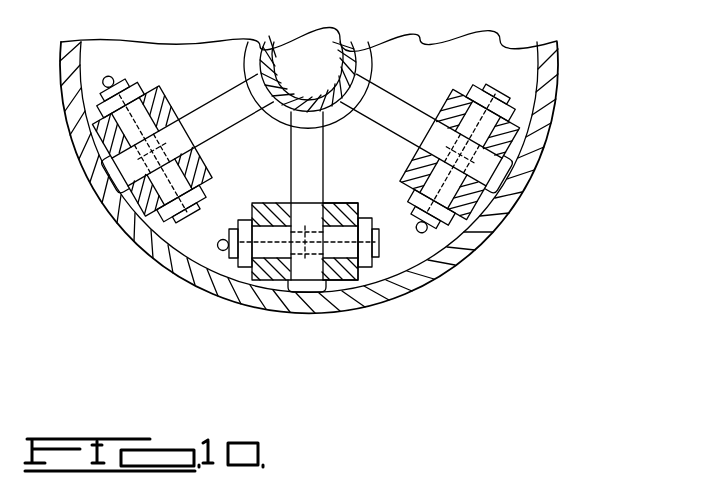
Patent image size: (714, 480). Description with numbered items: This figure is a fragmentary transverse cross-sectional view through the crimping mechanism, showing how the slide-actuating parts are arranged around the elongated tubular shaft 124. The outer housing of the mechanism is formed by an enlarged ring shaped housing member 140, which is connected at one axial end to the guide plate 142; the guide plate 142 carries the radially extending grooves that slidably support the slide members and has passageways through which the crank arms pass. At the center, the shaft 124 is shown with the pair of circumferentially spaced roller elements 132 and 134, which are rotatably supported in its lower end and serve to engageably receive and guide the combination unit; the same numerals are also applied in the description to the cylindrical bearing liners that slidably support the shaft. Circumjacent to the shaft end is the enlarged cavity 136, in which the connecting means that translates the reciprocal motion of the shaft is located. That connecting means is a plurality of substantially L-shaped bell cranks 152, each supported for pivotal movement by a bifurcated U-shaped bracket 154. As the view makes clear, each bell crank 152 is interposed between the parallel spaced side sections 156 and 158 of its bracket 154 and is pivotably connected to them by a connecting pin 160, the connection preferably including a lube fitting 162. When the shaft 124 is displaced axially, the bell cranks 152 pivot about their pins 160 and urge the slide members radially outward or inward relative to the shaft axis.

The tubular shaped shaft 124 is at (345, 67).
The roller element 132 is at (331, 52).
The roller element 134 is at (296, 44).
The cavity 136 is at (369, 58).
The ring shaped housing member 140 is at (548, 141).
The guide plate 142 is at (492, 6).
The bell crank 152 is at (307, 195).
The U-shaped bracket 154 is at (293, 195).
The side section 156 is at (256, 293).
The side section 158 is at (352, 204).
The connecting pin 160 is at (379, 247).
The lube fitting 162 is at (226, 238).